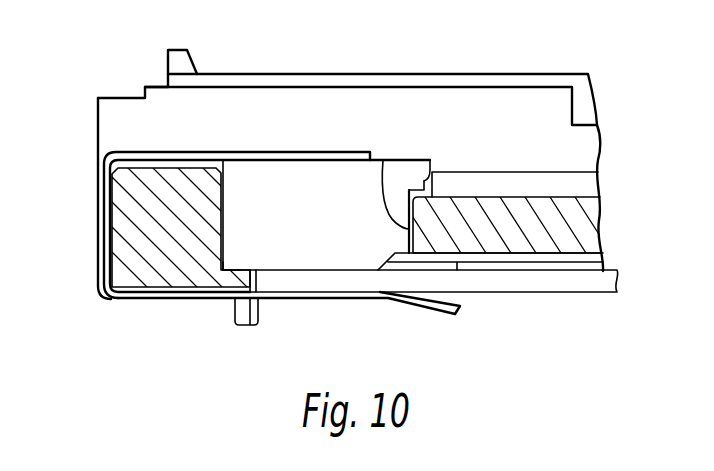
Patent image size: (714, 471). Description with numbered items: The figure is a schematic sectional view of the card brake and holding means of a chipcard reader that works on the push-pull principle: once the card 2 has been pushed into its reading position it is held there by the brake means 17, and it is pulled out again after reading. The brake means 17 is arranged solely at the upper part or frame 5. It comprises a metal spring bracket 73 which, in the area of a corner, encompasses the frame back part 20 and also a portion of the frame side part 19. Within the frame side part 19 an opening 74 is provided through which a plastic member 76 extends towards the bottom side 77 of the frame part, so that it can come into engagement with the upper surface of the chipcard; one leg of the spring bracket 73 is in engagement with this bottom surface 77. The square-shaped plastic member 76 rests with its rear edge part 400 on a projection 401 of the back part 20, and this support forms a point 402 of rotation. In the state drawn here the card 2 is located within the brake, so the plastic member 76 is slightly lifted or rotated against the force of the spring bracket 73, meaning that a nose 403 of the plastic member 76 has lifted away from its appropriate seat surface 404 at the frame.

The brake means 17 is at (142, 147).
The metal spring bracket 73 is at (196, 152).
The plastic member 76 is at (300, 183).
The opening 74 is at (385, 158).
The upper part or frame 5 is at (504, 196).
The nose 403 is at (416, 158).
The seat surface 404 is at (431, 172).
The frame back part 20 is at (113, 220).
The point of rotation 402 is at (226, 268).
The frame side part 19 is at (580, 237).
The rear edge part 400 is at (244, 262).
The projection 401 is at (248, 327).
The bottom side 77 is at (202, 301).
The card 2 is at (582, 282).